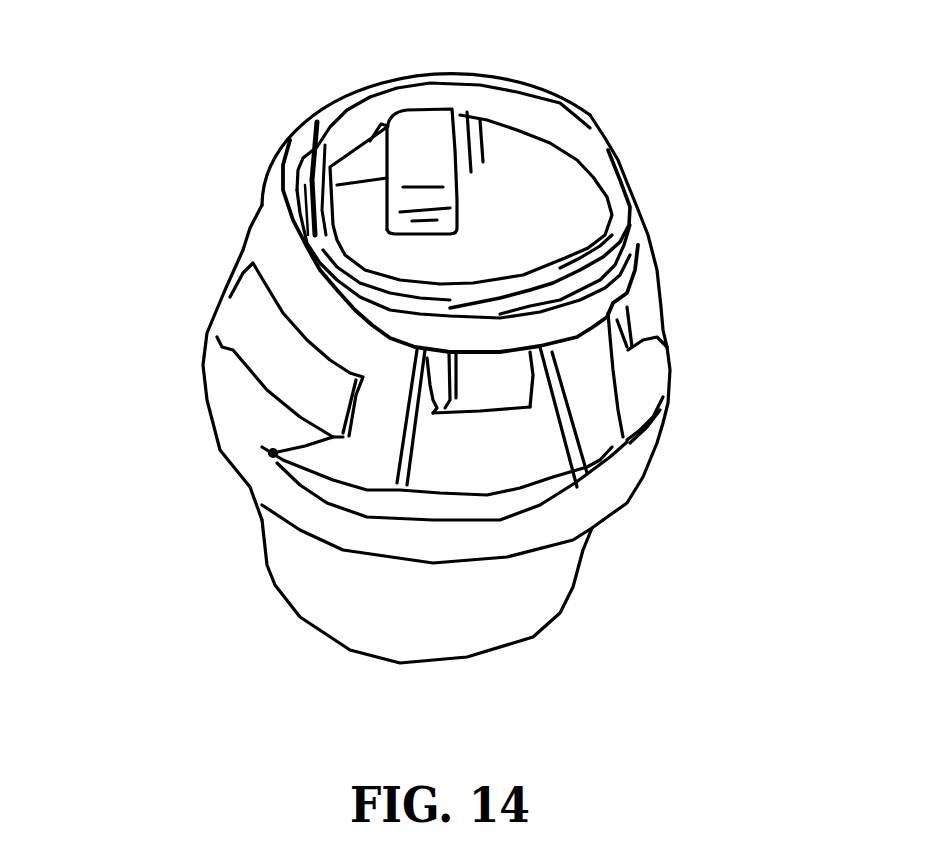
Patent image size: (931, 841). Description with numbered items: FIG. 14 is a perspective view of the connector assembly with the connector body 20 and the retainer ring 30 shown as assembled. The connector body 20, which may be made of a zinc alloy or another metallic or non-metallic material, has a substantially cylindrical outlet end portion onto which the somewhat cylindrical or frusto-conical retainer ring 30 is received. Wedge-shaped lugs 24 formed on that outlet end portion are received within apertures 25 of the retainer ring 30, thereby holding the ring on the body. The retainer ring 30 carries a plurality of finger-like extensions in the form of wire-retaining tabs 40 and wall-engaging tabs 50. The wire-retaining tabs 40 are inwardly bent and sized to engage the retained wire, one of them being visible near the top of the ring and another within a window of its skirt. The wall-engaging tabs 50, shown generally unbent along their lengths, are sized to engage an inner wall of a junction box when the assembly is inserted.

The connector body 20 is at (472, 584).
The wedge-shaped lugs 24 is at (216, 362).
The apertures 25 is at (368, 520).
The retainer ring 30 is at (510, 213).
The wire-retaining tabs 40 is at (418, 345).
The wall-engaging tabs 50 is at (673, 413).